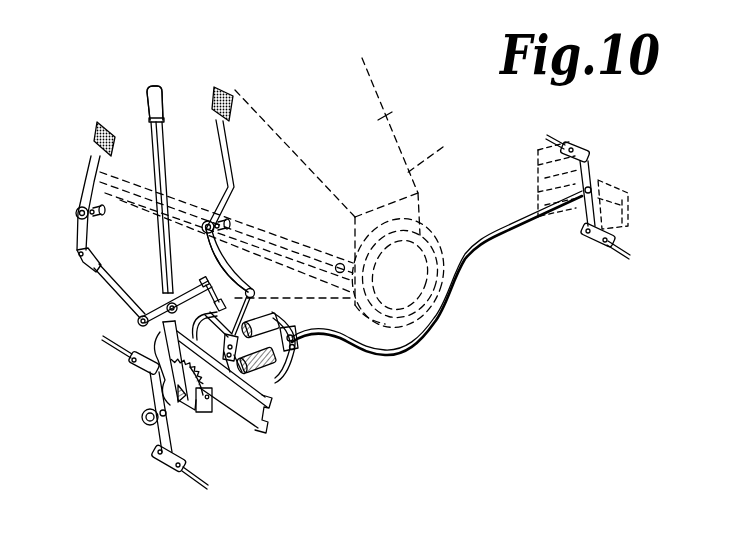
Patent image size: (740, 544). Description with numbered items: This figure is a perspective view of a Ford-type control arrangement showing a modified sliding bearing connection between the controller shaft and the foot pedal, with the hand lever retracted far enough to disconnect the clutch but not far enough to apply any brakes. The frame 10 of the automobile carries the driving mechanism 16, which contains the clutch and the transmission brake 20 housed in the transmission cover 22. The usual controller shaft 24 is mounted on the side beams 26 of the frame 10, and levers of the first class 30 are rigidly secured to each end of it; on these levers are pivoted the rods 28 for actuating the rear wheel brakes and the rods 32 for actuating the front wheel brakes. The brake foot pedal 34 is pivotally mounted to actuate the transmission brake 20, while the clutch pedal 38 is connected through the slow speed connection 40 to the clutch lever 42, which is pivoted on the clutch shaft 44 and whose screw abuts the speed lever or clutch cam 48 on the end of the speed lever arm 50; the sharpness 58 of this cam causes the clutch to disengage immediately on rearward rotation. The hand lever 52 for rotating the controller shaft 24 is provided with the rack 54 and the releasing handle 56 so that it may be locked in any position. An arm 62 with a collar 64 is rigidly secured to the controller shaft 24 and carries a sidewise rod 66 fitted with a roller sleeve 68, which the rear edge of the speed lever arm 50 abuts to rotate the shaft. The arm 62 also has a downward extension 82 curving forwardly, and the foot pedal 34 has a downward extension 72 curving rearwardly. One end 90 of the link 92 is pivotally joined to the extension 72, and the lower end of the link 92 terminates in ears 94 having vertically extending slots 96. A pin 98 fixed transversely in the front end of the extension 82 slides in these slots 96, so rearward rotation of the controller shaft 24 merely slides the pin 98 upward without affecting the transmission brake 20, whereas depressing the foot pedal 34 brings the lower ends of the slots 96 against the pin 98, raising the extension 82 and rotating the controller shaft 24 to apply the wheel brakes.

The frame 10 is at (633, 212).
The driving mechanism 16 is at (281, 214).
The transmission brake 20 is at (393, 113).
The transmission cover 22 is at (400, 153).
The controller shaft 24 is at (533, 226).
The side beams 26 is at (630, 177).
The rods for actuating the rear wheel brakes 28 is at (628, 263).
The levers of the first class 30 is at (590, 175).
The rods for actuating the front wheel brakes 32 is at (555, 137).
The brake foot pedal 34 is at (230, 157).
The clutch pedal 38 is at (90, 170).
The slow speed connection 40 is at (126, 300).
The clutch lever 42 is at (139, 324).
The clutch shaft 44 is at (167, 305).
The speed lever (clutch cam) 48 is at (192, 312).
The speed lever arm 50 is at (218, 322).
The hand lever 52 is at (147, 92).
The rack 54 is at (205, 385).
The releasing handle 56 is at (163, 90).
The sharpness of the crank cam 58 is at (230, 299).
The arm 62 is at (279, 328).
The collar 64 is at (294, 349).
The rod 66 is at (262, 368).
The roller sleeve 68 is at (258, 322).
The downward extension of the foot pedal 72 is at (228, 266).
The downward extension of the arm 82 is at (283, 374).
The end of the link 90 is at (256, 293).
The link 92 is at (190, 338).
The ears 94 is at (235, 333).
The vertically extending slots 96 is at (242, 357).
The pin 98 is at (233, 357).